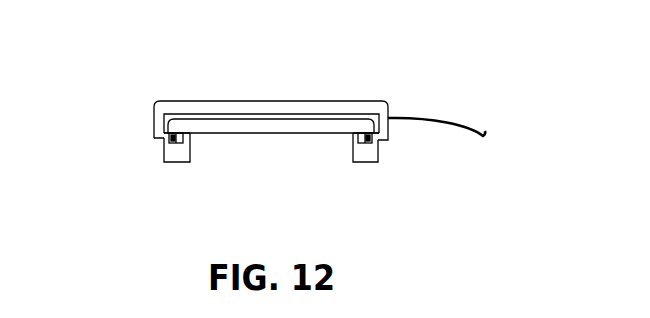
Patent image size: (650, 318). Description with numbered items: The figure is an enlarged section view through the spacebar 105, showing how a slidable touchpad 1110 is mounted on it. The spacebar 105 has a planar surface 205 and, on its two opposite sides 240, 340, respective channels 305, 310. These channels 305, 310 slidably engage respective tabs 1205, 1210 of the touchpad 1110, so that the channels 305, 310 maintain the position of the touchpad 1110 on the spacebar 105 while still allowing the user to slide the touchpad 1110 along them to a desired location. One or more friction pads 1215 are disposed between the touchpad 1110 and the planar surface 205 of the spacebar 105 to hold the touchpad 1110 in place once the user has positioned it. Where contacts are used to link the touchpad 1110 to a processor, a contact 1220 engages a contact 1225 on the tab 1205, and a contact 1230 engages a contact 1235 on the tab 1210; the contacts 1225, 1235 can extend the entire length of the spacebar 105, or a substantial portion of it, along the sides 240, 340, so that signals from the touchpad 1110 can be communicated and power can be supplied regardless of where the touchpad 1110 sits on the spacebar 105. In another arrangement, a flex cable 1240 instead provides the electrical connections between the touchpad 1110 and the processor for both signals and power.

The spacebar 105 is at (280, 120).
The planar surface 205 is at (255, 118).
The side 240 is at (166, 155).
The channel 305 is at (183, 143).
The channel 310 is at (360, 142).
The side 340 is at (380, 162).
The touchpad 1110 is at (155, 107).
The tab 1205 is at (170, 143).
The tab 1210 is at (372, 145).
The friction pad 1215 is at (315, 117).
The contact 1220 is at (176, 140).
The contact 1225 is at (170, 140).
The contact 1230 is at (358, 128).
The contact 1235 is at (369, 135).
The flex cable 1240 is at (458, 118).